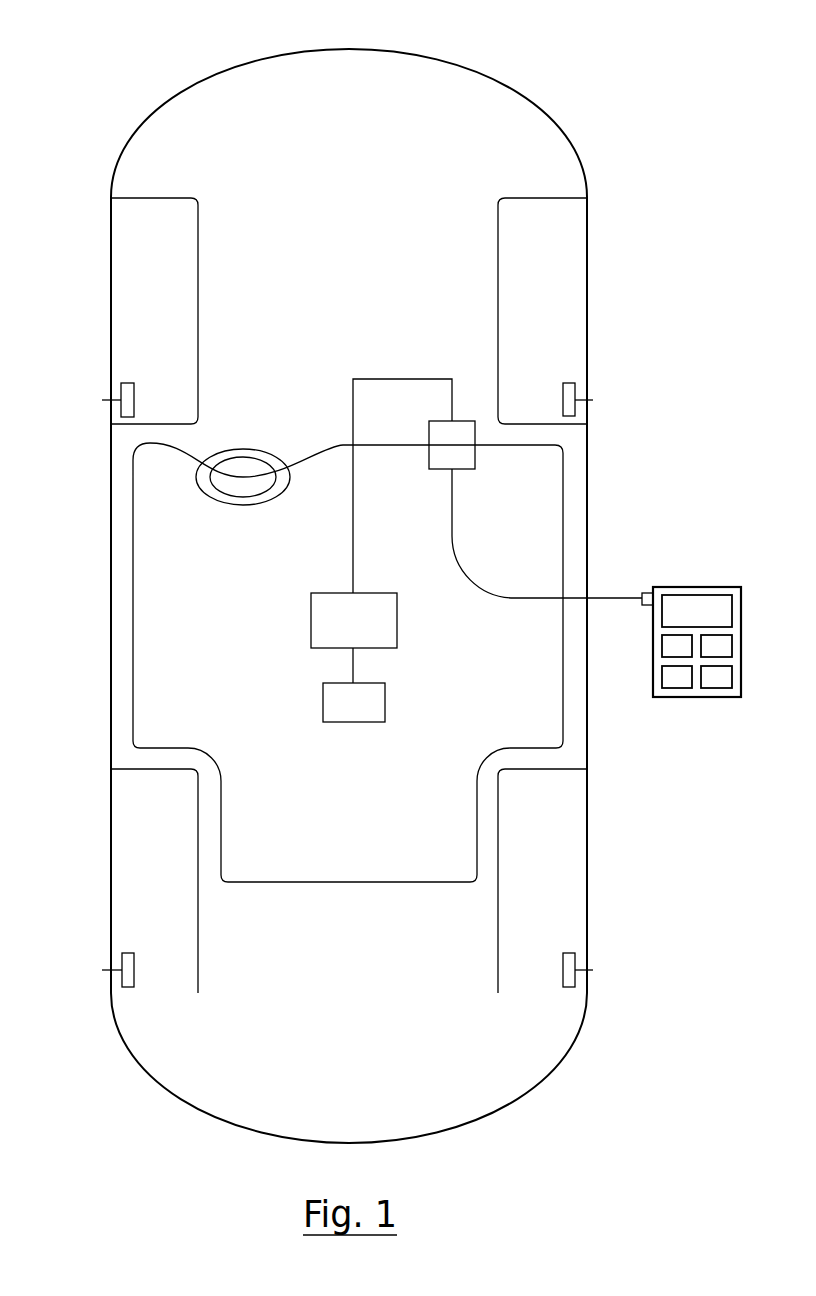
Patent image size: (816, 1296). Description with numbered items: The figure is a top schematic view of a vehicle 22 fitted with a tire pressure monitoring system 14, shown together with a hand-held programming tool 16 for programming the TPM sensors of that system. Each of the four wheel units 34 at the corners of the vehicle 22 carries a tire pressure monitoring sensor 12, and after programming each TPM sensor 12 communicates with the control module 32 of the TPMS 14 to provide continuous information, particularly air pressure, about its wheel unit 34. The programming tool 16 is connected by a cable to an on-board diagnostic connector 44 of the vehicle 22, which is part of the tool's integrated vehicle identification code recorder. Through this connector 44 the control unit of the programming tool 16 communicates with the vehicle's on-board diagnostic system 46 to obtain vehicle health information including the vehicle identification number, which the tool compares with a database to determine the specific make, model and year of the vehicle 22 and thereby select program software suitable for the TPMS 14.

The tire pressure monitoring system 14 is at (660, 42).
The wheel unit 34 is at (82, 302).
The tire pressure monitoring sensor 12 is at (134, 399).
The vehicle 22 is at (587, 437).
The on-board diagnostic connector 44 is at (429, 456).
The on-board diagnostic system 46 is at (311, 620).
The control module 32 is at (323, 705).
The programming tool 16 is at (695, 566).